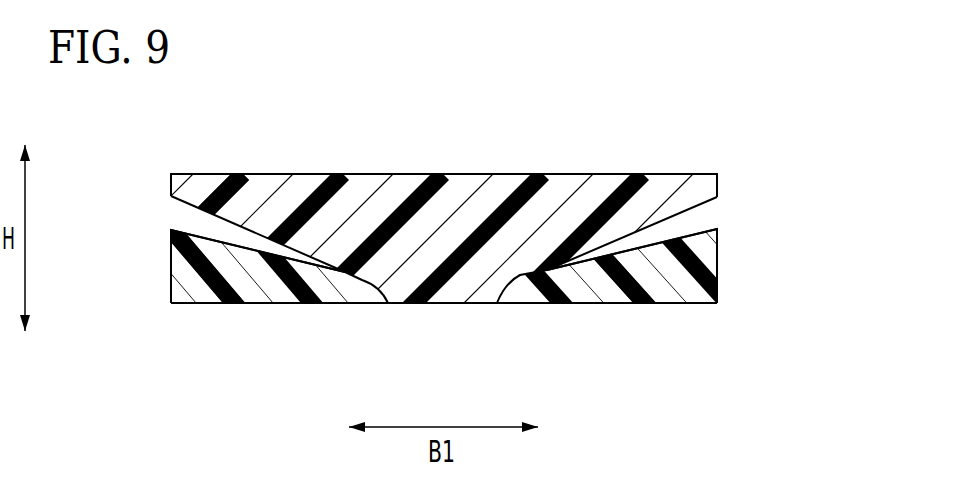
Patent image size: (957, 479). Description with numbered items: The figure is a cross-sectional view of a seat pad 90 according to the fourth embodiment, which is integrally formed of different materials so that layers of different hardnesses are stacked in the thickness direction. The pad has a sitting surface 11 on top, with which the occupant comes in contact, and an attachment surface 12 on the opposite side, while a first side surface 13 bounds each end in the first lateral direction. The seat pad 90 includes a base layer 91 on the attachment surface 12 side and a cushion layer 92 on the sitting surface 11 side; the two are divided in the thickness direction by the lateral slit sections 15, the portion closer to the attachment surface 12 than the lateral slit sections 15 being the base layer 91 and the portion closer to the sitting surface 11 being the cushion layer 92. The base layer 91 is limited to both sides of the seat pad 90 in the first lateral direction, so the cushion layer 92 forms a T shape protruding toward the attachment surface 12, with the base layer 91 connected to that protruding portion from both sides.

The seat pad 90 is at (708, 125).
The sitting surface 11 is at (450, 173).
The attachment surface 12 is at (441, 305).
The first side surface 13 is at (172, 268).
The lateral slit sections 15 is at (166, 213).
The base layer 91 is at (263, 296).
The cushion layer 92 is at (273, 182).